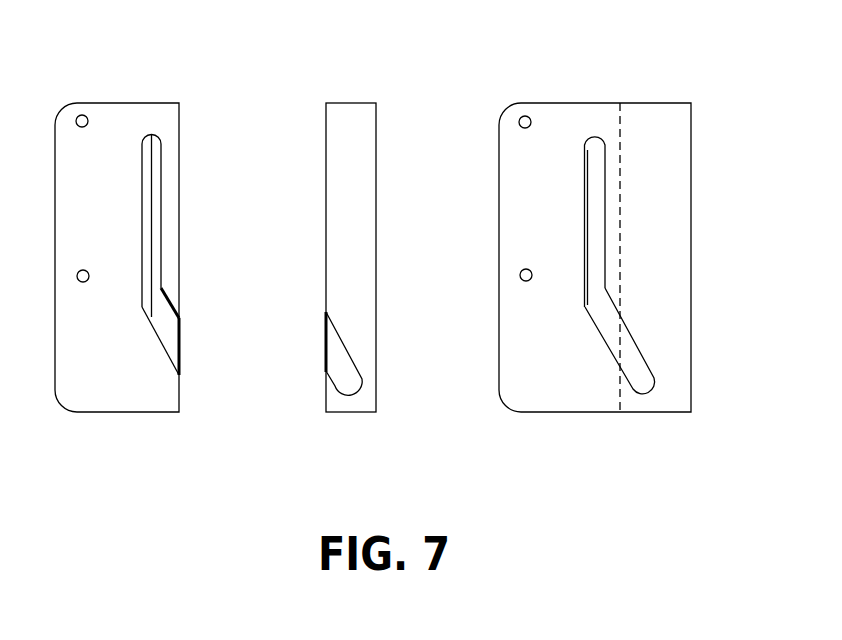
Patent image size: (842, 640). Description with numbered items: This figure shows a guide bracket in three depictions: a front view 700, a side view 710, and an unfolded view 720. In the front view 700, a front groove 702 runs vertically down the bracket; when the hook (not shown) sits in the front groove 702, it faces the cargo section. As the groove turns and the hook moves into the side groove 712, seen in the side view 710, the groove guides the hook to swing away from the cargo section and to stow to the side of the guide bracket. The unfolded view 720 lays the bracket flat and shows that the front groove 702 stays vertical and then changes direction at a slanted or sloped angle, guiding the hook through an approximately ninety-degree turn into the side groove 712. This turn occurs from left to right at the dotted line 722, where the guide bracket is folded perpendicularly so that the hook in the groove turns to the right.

The front view 700 is at (142, 67).
The front groove 702 is at (148, 202).
The side view 710 is at (357, 68).
The side groove 712 is at (337, 358).
The unfolded view 720 is at (612, 68).
The dotted line 722 is at (620, 208).